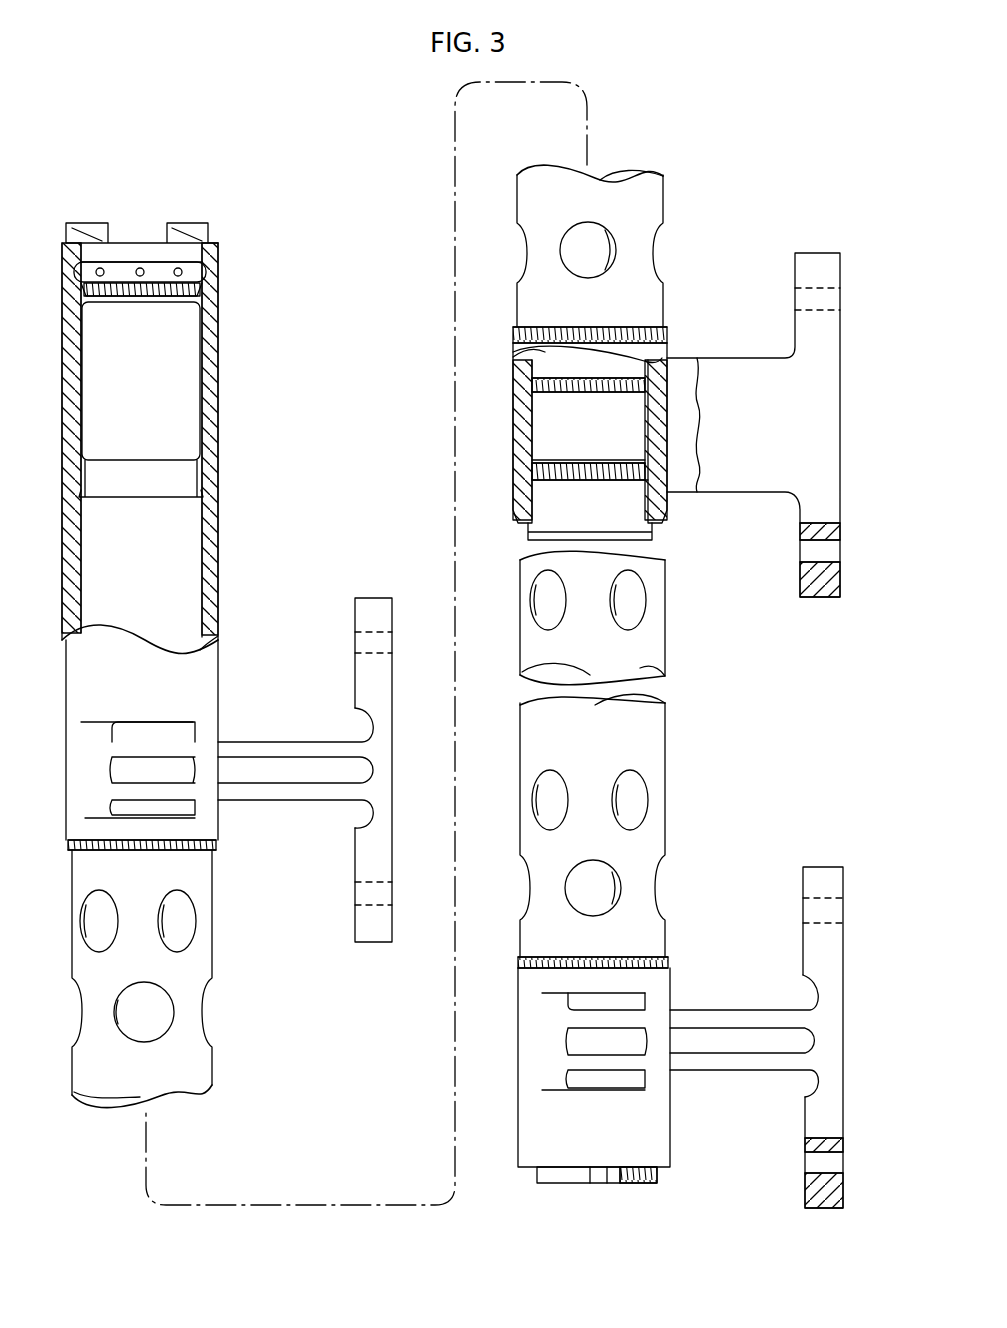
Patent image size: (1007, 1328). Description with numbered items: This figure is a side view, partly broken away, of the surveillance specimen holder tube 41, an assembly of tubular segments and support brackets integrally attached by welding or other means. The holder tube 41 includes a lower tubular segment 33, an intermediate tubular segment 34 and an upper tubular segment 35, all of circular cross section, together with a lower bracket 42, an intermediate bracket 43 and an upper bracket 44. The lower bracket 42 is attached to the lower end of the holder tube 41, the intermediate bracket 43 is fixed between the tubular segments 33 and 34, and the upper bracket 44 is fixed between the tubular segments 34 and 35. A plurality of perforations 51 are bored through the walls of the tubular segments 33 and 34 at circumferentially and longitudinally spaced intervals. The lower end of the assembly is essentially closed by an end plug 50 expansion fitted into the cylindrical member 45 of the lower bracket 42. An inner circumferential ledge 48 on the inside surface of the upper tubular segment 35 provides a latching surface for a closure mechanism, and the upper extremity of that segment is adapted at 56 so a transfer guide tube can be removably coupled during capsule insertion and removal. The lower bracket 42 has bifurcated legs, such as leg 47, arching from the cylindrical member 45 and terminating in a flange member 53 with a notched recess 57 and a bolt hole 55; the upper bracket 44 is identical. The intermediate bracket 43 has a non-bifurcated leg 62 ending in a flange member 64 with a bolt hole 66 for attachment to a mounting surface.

The lower tubular segment 33 is at (650, 708).
The intermediate tubular segment 34 is at (203, 1087).
The upper tubular segment 35 is at (213, 572).
The holder tube 41 is at (174, 421).
The lower bracket 42 is at (645, 1061).
The intermediate bracket 43 is at (733, 375).
The upper bracket 44 is at (205, 730).
The cylindrical member 45 is at (540, 980).
The bifurcated leg 47 is at (726, 1070).
The inner circumferential ledge 48 is at (200, 476).
The end plug 50 is at (630, 1181).
The perforations 51 is at (190, 928).
The flange member 53 is at (849, 1037).
The bolt hole 55 is at (830, 900).
The adapted upper extremity 56 is at (192, 247).
The notched recess 57 is at (810, 994).
The leg 62 is at (757, 480).
The flange member 64 is at (828, 268).
The bolt hole 66 is at (842, 555).